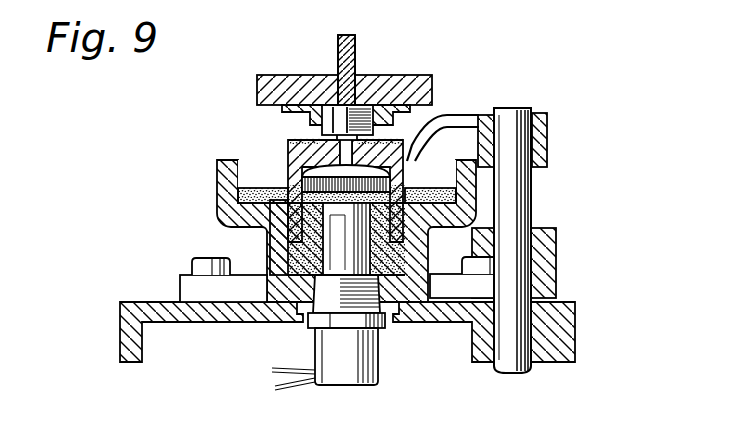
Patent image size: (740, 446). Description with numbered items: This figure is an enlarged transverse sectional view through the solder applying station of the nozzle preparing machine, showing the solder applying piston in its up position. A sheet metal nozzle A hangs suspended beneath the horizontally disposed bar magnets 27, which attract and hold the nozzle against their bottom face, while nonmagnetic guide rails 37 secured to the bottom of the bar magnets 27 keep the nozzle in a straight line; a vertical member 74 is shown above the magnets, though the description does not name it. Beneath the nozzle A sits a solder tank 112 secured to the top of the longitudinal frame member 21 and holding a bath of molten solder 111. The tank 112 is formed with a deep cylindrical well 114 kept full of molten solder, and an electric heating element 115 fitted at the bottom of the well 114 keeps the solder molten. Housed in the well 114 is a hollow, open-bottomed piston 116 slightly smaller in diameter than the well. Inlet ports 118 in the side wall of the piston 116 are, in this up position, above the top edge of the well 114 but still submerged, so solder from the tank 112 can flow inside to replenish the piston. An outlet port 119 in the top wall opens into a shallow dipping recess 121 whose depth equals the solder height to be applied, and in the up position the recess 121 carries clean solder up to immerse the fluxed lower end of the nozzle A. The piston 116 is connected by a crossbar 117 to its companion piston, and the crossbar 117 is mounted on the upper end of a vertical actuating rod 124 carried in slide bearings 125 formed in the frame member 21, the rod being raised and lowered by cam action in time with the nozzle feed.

The longitudinal frame member 21 is at (128, 332).
The bar magnets 27 is at (282, 83).
The guide rails 37 is at (287, 110).
The shaft 74 is at (355, 44).
The molten solder 111 is at (247, 192).
The solder tank 112 is at (217, 162).
The wells 114 is at (285, 265).
The electric heating elements 115 is at (346, 220).
The piston 116 is at (297, 168).
The crossbar 117 is at (462, 120).
The inlet ports 118 is at (408, 197).
The outlet ports 119 is at (353, 155).
The dipping recess 121 is at (310, 147).
The actuating rod 124 is at (512, 188).
The slide bearings 125 is at (540, 254).
The sheet metal nozzles A is at (327, 130).